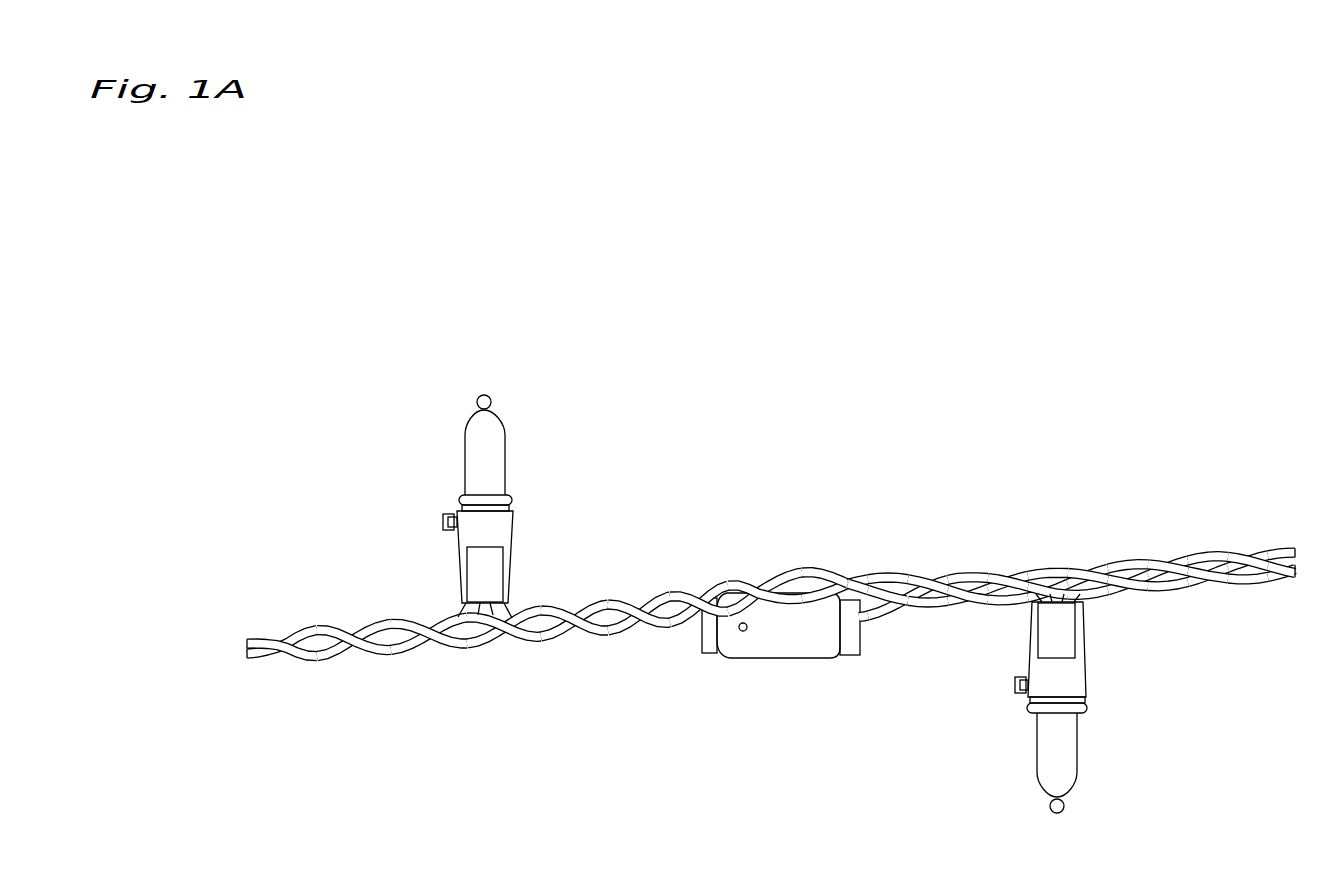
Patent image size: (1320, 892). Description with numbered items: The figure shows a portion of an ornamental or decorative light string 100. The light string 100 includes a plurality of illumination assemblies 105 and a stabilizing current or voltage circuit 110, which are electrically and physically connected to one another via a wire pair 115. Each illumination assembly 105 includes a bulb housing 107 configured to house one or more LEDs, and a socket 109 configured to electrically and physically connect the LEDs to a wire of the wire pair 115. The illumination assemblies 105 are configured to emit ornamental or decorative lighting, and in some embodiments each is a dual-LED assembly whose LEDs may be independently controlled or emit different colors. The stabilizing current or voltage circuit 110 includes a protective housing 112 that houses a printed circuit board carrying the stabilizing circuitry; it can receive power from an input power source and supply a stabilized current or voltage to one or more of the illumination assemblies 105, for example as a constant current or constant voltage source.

The light string 100 is at (1199, 386).
The illumination assembly 105 is at (513, 542).
The bulb housing 107 is at (502, 428).
The socket 109 is at (458, 547).
The stabilizing current or voltage circuit 110 is at (770, 660).
The protective housing 112 is at (848, 658).
The wire pair 115 is at (861, 566).